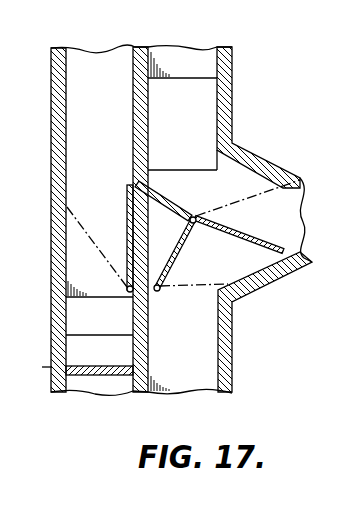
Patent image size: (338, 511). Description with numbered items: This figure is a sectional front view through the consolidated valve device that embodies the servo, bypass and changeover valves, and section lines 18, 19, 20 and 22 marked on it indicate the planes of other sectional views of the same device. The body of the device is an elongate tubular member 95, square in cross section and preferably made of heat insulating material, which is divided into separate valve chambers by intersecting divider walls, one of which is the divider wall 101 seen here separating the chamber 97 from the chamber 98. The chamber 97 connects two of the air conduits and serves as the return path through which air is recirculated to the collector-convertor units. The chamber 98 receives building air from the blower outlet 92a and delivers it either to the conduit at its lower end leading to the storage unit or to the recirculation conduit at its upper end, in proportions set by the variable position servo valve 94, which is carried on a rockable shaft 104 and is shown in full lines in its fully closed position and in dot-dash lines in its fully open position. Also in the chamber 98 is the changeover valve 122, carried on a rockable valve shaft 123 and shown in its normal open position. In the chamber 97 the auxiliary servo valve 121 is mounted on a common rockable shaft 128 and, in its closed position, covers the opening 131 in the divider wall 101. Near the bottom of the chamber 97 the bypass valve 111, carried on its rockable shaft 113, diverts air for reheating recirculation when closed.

The valve chamber 97 is at (76, 118).
The divider wall 101 is at (148, 108).
The elongate tubular member 95 is at (242, 124).
The blower outlet 92a is at (300, 176).
The servo valve 94 is at (262, 246).
The rockable shaft 104 is at (191, 217).
The auxiliary servo valve 121 is at (126, 193).
The opening 131 is at (126, 226).
The changeover valve 122 is at (171, 246).
The common rockable shaft 128 is at (130, 294).
The rockable valve shaft 123 is at (158, 291).
The valve chamber 98 is at (210, 337).
The bypass valve 111 is at (108, 352).
The rockable shaft 113 is at (42, 368).
The view direction arrow 22 is at (45, 335).
The section line 18 is at (36, 79).
The section line 19 is at (93, 8).
The section line 20 is at (187, 5).